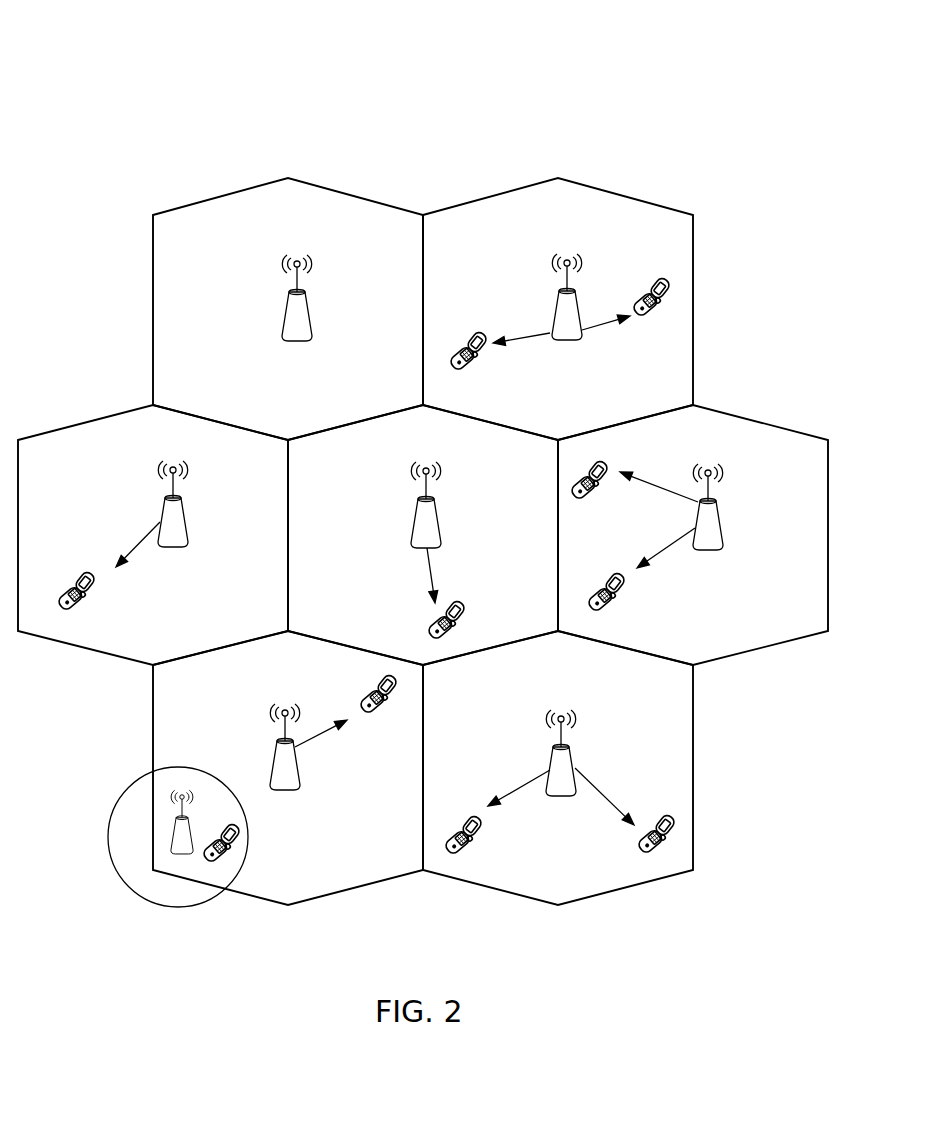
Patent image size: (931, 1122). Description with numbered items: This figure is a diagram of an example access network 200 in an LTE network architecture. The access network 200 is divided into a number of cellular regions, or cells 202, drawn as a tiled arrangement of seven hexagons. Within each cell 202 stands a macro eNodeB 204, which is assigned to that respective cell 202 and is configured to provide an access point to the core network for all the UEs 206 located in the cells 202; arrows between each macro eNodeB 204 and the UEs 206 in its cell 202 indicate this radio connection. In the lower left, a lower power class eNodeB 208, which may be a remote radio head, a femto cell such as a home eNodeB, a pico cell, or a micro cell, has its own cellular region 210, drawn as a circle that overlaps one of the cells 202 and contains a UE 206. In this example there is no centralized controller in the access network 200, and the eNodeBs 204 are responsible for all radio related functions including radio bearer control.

The access network 200 is at (200, 62).
The cellular region 202 is at (152, 243).
The macro eNodeB 204 is at (296, 258).
The UE 206 is at (662, 278).
The lower power class eNodeB 208 is at (180, 817).
The cellular region of lower power class eNodeB 210 is at (118, 868).